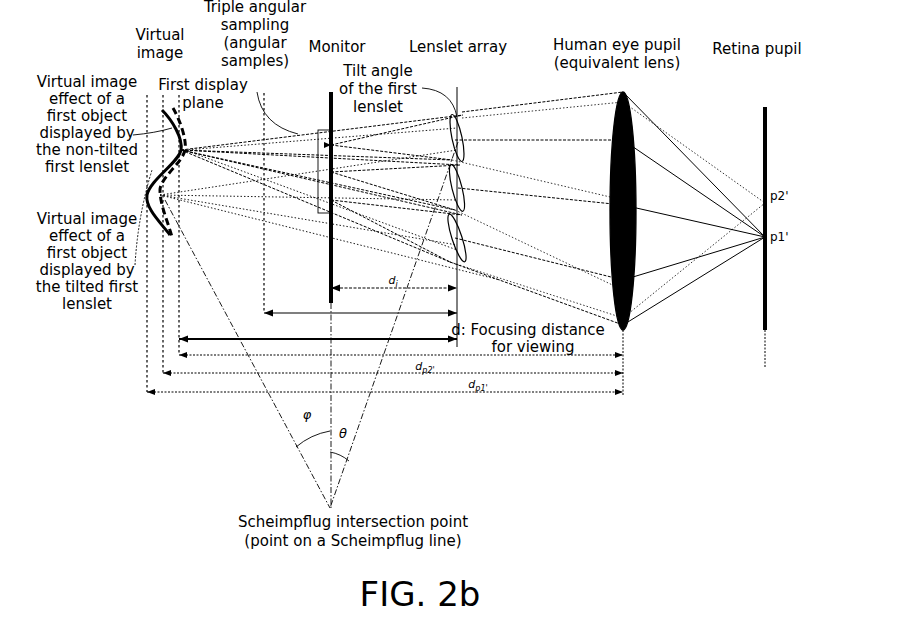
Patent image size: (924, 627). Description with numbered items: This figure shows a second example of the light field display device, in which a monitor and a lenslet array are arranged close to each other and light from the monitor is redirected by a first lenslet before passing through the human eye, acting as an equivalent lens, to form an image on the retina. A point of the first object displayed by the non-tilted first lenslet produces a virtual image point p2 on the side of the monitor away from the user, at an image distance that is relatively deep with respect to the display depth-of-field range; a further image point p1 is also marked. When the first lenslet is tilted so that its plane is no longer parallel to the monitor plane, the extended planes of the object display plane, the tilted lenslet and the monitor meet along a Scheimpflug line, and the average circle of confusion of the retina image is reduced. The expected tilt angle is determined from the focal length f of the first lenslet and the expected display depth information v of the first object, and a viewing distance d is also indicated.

The virtual image point of first object displayed by non-tilted first lenslet p1 is at (164, 172).
The image point p2 is at (152, 172).
The focal length of the first lenslet f is at (360, 308).
The expected display depth information of the first object v is at (318, 334).
The focusing distance for viewing d is at (401, 339).